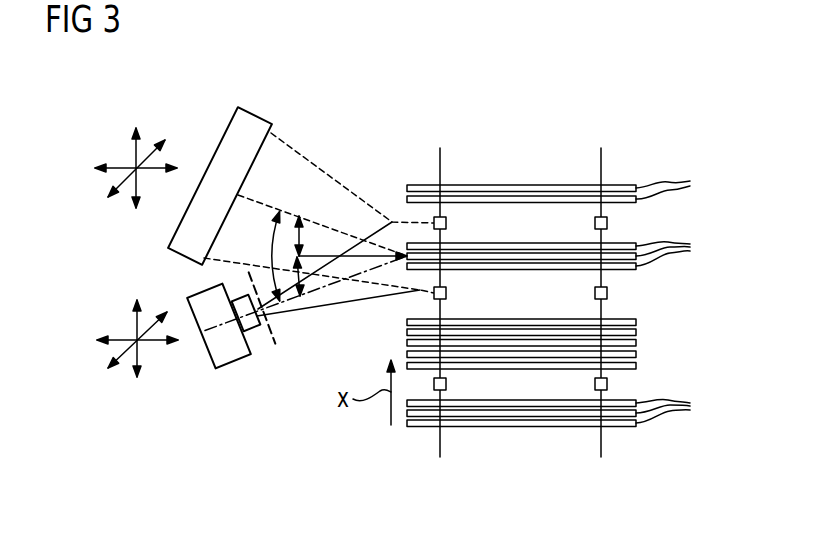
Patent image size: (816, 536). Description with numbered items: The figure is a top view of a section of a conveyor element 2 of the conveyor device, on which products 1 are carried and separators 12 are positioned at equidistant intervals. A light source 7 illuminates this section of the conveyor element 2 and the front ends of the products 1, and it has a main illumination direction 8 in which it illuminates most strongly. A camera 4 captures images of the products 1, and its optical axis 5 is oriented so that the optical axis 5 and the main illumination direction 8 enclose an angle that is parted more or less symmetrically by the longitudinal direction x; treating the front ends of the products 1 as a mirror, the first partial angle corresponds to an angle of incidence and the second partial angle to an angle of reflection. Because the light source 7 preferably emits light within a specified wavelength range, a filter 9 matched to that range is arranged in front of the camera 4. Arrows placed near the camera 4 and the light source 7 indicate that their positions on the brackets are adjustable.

The products 1 is at (555, 298).
The conveyor element 2 is at (440, 157).
The camera 4 is at (218, 365).
The optical axis 5 is at (337, 280).
The light source 7 is at (251, 133).
The main illumination direction 8 is at (267, 203).
The filter 9 is at (277, 347).
The separators 12 is at (447, 224).